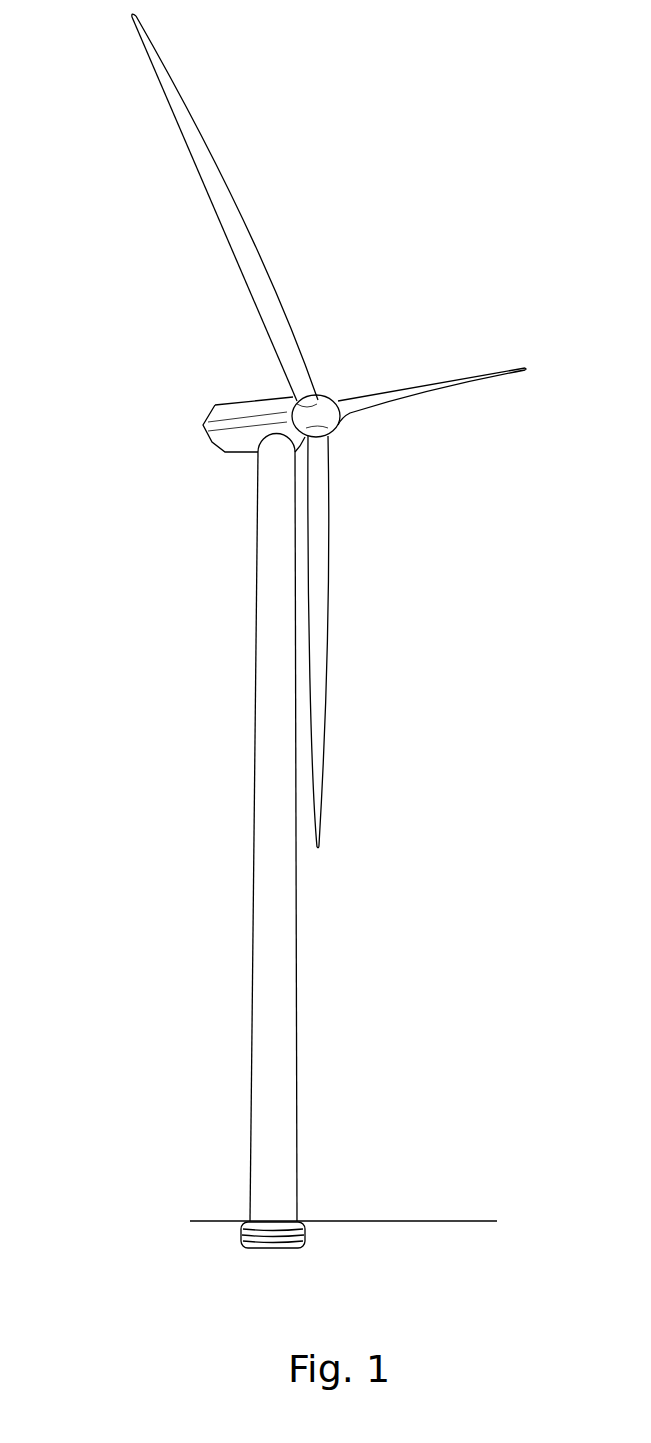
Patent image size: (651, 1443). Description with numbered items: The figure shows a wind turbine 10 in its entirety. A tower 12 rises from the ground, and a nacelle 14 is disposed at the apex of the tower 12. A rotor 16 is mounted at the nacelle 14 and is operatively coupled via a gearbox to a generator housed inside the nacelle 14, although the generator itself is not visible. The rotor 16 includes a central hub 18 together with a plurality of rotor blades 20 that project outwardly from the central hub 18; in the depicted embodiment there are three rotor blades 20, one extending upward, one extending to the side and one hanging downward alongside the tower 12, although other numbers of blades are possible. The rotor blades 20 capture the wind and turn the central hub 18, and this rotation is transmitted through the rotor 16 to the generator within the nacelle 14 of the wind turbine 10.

The wind turbine 10 is at (470, 187).
The tower 12 is at (253, 903).
The nacelle 14 is at (230, 402).
The rotor 16 is at (406, 337).
The central hub 18 is at (338, 421).
The rotor blades 20 is at (175, 128).